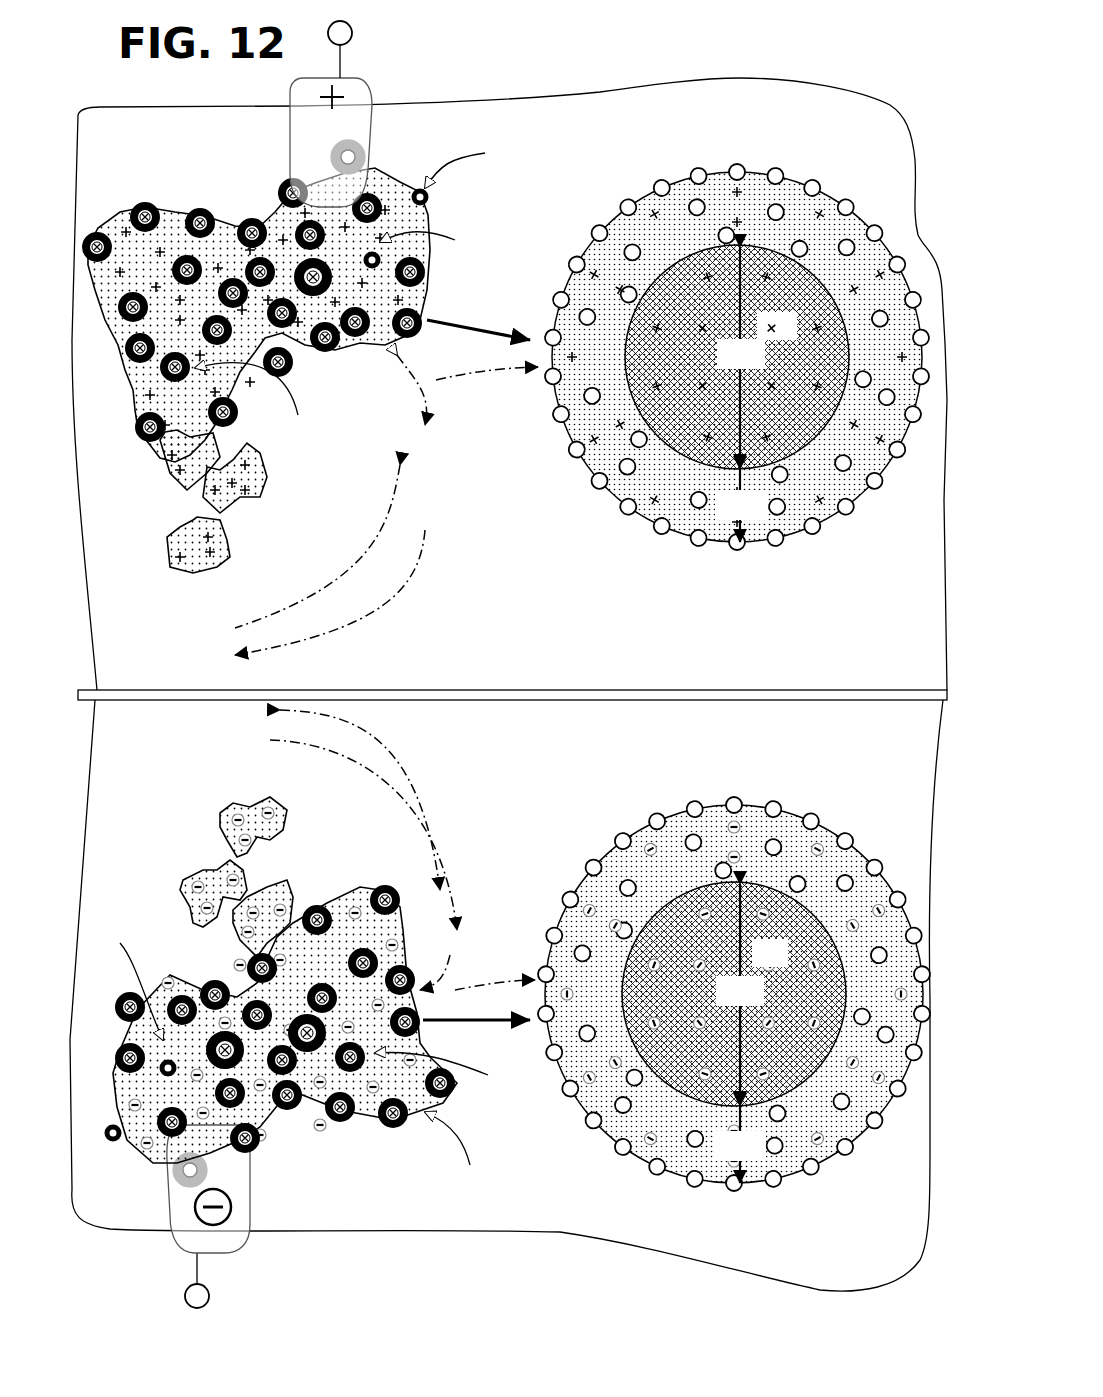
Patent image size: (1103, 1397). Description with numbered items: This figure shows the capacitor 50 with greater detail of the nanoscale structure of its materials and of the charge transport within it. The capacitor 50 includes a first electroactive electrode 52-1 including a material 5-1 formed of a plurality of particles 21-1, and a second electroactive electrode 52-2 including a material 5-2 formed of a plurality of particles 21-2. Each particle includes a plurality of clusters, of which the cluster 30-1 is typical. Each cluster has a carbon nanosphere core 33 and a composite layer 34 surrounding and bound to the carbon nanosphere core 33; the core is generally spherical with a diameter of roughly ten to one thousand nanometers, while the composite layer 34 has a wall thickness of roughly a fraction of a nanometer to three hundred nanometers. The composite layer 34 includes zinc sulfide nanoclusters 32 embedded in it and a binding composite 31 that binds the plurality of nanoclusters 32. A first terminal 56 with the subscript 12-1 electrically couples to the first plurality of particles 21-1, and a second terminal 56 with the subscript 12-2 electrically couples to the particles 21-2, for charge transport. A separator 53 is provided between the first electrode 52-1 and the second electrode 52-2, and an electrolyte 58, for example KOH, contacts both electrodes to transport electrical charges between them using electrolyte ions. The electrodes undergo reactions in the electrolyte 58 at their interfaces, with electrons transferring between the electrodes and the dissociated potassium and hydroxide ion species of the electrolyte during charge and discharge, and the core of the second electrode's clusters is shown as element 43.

The capacitor 50 is at (550, 75).
The first electroactive electrode 52-1 is at (148, 130).
The second electroactive electrode 52-2 is at (385, 1195).
The particles 21-1 is at (245, 195).
The particles 21-2 is at (312, 1137).
The material 5-1 is at (165, 512).
The material 5-2 is at (195, 825).
The first terminal subscript 12-1 is at (391, 139).
The second terminal subscript 12-2 is at (253, 1198).
The terminal 56 is at (352, 35).
The separator 53 is at (820, 700).
The electrolyte 58 is at (888, 636).
The cluster 30-1 is at (753, 315).
The binding composite 31 is at (874, 540).
The zinc sulfide nanoclusters 32 is at (757, 361).
The carbon nanosphere core 33 is at (737, 357).
The composite layer 34 is at (655, 134).
The cathode particle core (discharged) 43 is at (769, 955).